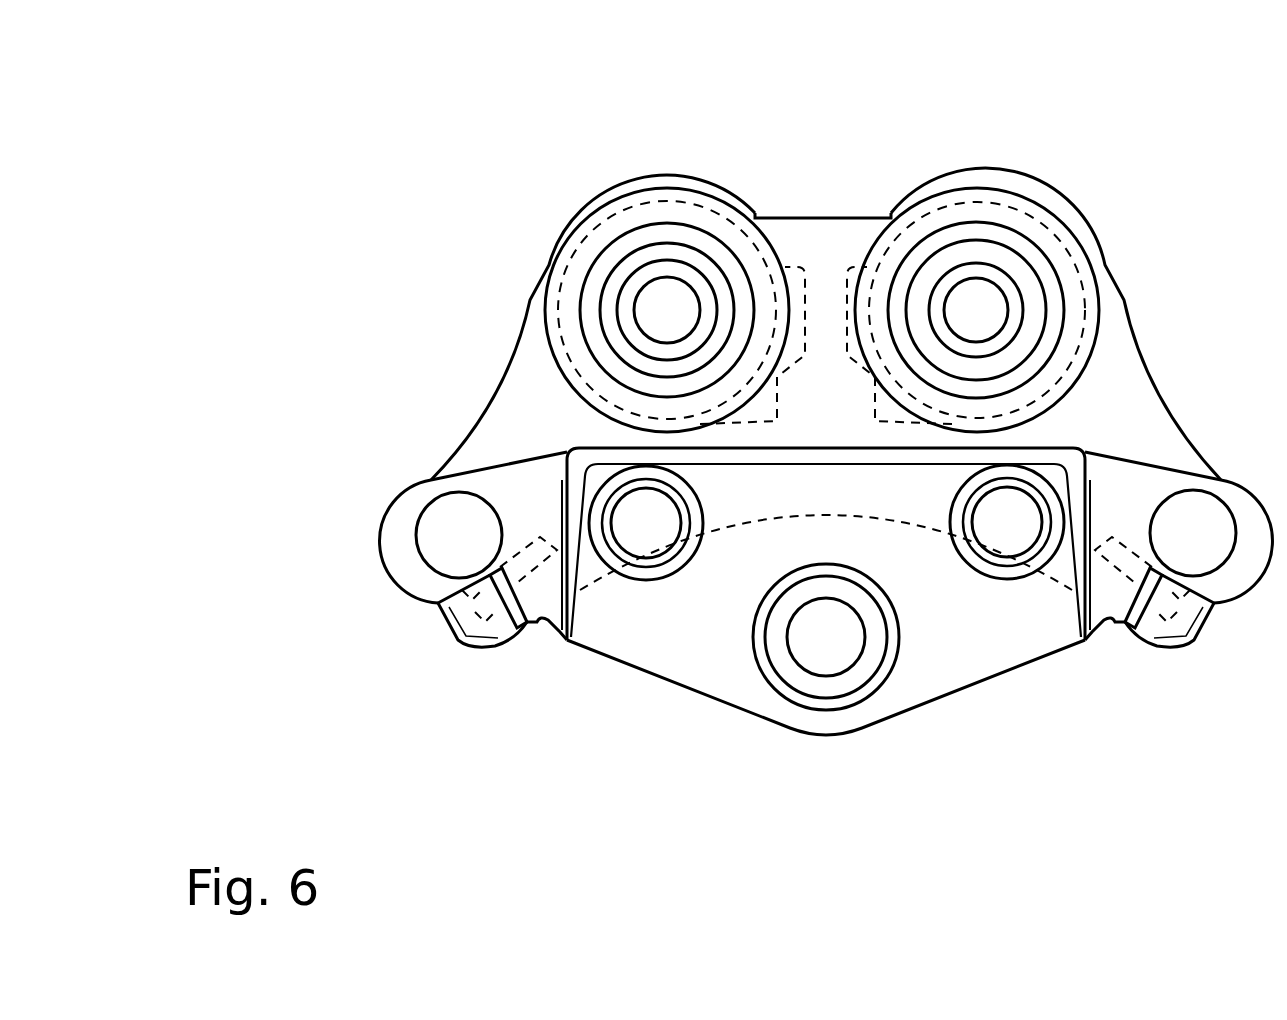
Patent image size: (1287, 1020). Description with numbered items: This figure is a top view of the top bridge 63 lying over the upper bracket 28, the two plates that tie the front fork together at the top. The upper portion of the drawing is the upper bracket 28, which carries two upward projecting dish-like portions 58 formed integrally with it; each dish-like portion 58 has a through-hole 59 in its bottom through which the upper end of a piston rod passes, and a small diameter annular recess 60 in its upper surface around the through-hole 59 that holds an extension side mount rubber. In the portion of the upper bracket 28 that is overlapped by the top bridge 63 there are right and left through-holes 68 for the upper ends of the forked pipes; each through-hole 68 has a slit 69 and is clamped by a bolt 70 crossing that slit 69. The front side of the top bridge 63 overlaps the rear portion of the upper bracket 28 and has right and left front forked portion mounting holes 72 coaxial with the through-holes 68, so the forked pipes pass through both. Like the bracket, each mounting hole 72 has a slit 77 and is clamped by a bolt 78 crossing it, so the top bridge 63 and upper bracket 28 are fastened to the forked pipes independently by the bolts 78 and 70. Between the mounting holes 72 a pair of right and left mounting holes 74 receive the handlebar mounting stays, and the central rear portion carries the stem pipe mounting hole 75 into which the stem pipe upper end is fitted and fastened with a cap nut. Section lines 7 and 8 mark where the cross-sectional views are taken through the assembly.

The upper bracket 28 is at (1135, 388).
The dish-like portion 58 is at (577, 250).
The through-hole 59 is at (660, 305).
The annular recess 60 is at (668, 267).
The top bridge 63 is at (960, 665).
The through-hole 68 is at (433, 528).
The slit 69 is at (537, 623).
The bolt 70 is at (463, 640).
The front forked portion mounting hole 72 is at (417, 563).
The mounting hole 74 is at (670, 512).
The stem pipe mounting hole 75 is at (848, 655).
The slit 77 is at (537, 658).
The bolt 78 is at (453, 650).
The section line 7- 7 is at (822, 190).
The section line 8- 8 is at (453, 410).